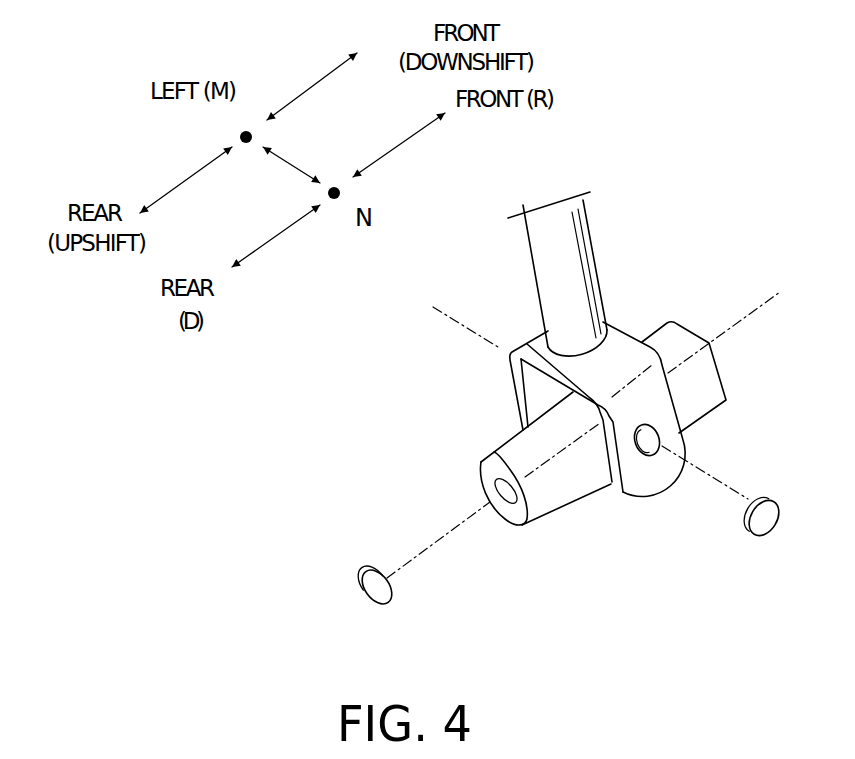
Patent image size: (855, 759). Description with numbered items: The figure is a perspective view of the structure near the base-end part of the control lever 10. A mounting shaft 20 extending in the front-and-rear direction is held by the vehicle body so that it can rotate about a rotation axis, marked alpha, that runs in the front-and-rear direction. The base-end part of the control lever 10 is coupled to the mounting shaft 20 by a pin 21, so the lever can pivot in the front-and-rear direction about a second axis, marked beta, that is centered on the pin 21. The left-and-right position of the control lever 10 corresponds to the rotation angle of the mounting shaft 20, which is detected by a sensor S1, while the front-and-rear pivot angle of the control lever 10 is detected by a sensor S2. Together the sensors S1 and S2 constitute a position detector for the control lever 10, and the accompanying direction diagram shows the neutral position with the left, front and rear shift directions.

The control lever 10 is at (567, 241).
The mounting shaft 20 is at (563, 493).
The pin 21 is at (662, 438).
The sensor S1 is at (377, 607).
The sensor S2 is at (767, 533).